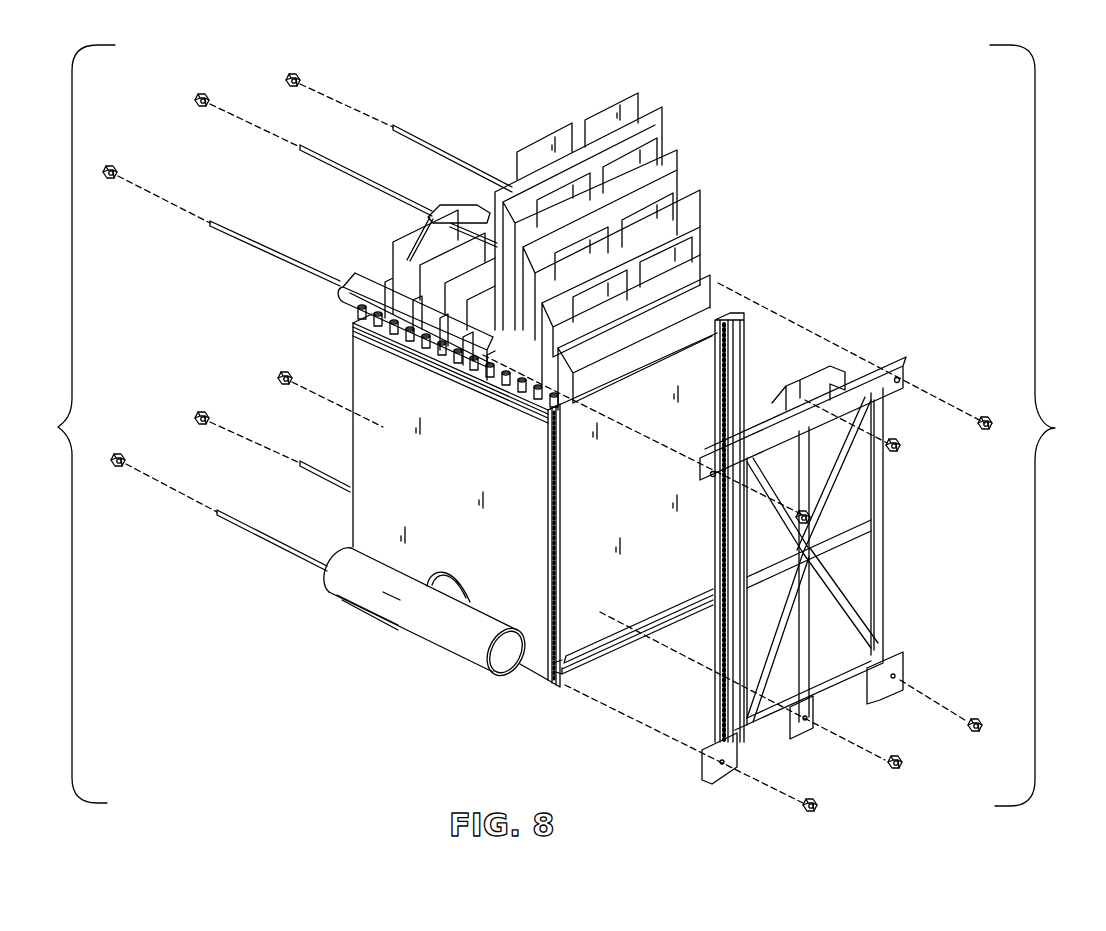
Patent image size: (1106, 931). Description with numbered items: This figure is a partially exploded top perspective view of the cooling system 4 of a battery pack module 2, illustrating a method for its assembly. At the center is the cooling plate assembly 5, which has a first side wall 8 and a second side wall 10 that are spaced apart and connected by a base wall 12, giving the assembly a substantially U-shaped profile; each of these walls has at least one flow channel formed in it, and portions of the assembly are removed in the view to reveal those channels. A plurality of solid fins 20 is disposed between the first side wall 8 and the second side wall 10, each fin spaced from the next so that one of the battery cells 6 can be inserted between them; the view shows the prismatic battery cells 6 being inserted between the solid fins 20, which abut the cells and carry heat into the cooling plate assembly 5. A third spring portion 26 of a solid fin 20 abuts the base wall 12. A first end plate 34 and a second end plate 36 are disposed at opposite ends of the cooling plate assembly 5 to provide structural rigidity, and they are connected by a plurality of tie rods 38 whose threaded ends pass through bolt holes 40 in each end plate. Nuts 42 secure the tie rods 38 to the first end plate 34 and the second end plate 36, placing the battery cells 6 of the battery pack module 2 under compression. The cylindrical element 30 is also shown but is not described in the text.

The battery pack module 2 is at (1055, 428).
The cooling system 4 is at (412, 511).
The cooling plate assembly 5 is at (476, 471).
The battery cells 6 is at (683, 240).
The first side wall 8 is at (372, 403).
The second side wall 10 is at (743, 319).
The base wall 12 is at (606, 656).
The solid fins 20 is at (642, 480).
The third spring portion 26 is at (563, 684).
The cylindrical conduit 30 is at (427, 622).
The first end plate 34 is at (850, 563).
The second end plate 36 is at (383, 266).
The tie rods 38 is at (407, 130).
The bolt holes 40 is at (880, 367).
The nuts 42 is at (840, 472).